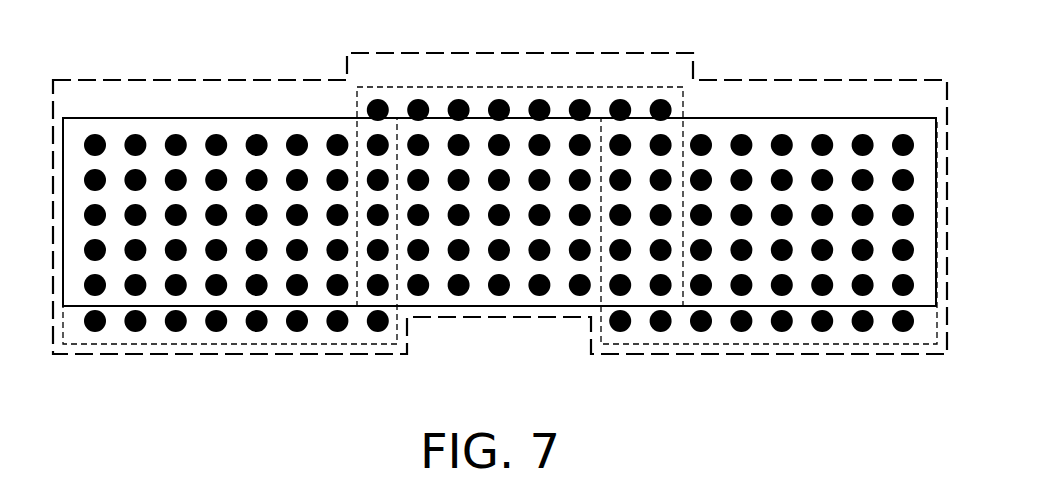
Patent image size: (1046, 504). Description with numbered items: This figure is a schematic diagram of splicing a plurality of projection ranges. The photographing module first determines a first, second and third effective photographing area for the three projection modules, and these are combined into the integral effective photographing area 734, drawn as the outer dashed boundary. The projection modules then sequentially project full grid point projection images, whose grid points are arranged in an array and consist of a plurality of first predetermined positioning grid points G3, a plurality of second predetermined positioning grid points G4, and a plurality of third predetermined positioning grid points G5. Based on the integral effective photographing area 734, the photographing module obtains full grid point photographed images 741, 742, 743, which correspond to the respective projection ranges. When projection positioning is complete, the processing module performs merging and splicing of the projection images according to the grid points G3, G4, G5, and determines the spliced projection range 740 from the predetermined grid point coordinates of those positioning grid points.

The integral effective photographing area 734 is at (230, 80).
The spliced projection range 740 is at (878, 117).
The first full grid point photographed image 741 is at (245, 345).
The second full grid point photographed image 742 is at (498, 85).
The third full grid point photographed image 743 is at (758, 345).
The first predetermined positioning grid points G3 is at (137, 136).
The second predetermined positioning grid points G4 is at (418, 100).
The third predetermined positioning grid points G5 is at (782, 136).